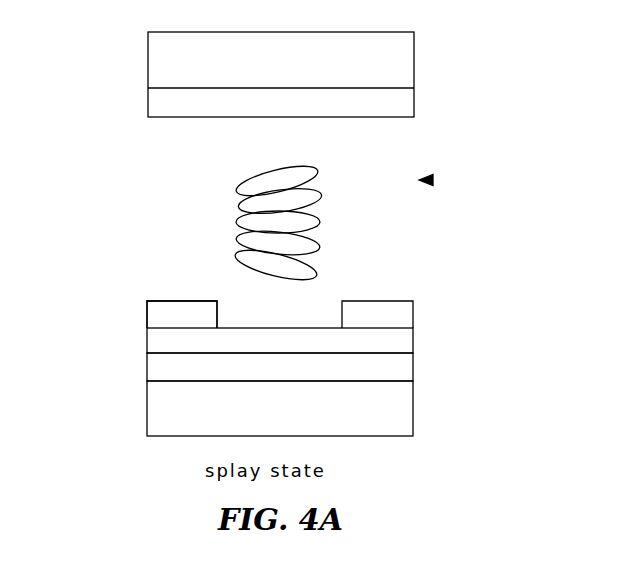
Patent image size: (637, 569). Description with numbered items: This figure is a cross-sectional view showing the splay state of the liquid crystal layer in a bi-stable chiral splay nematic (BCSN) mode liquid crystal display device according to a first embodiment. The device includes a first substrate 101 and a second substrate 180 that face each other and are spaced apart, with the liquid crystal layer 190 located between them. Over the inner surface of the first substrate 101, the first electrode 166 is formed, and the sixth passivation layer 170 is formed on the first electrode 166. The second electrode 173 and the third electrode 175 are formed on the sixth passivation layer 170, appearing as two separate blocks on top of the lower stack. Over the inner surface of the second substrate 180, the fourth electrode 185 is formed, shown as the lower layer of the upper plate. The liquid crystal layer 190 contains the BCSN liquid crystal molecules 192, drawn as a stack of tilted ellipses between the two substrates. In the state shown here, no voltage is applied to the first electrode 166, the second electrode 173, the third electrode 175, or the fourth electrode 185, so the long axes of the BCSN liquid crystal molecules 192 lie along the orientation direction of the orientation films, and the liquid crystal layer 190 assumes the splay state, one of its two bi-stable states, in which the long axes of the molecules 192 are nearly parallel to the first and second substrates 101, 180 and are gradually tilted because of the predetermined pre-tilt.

The second substrate 180 is at (399, 58).
The fourth electrode 185 is at (401, 103).
The liquid crystal layer 190 is at (432, 180).
The BCSN liquid crystal molecules 192 is at (310, 223).
The third electrode 175 is at (400, 318).
The second electrode 173 is at (162, 311).
The sixth passivation layer 170 is at (400, 343).
The first electrode 166 is at (400, 372).
The first substrate 101 is at (397, 432).